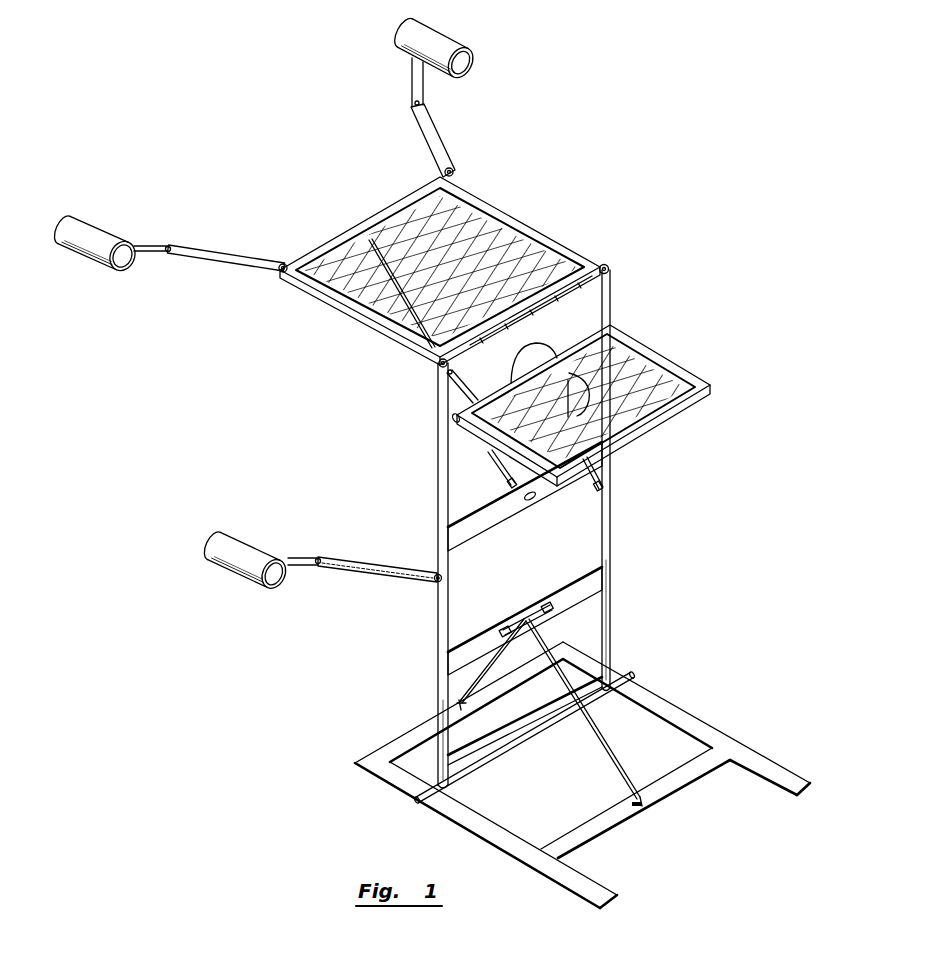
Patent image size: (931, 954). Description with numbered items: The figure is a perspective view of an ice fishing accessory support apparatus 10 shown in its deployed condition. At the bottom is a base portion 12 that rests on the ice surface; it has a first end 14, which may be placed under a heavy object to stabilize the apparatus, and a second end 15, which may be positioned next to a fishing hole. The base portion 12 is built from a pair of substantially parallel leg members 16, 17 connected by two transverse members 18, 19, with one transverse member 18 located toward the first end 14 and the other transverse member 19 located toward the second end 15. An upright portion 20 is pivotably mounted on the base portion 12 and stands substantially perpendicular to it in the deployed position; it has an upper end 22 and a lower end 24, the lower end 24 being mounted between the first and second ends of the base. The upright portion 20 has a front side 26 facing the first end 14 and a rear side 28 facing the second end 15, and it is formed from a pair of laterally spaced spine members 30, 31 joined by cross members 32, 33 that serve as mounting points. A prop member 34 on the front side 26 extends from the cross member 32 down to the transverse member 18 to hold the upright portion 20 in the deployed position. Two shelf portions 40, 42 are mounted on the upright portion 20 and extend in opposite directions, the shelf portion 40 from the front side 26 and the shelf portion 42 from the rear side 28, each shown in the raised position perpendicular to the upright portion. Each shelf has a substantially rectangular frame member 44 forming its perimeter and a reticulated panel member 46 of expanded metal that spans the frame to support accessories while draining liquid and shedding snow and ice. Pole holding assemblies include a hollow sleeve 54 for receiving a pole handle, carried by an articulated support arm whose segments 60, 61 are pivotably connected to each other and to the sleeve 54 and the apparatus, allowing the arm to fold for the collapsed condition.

The ice fishing accessory support apparatus 10 is at (572, 177).
The base portion 12 is at (562, 902).
The first end 14 is at (800, 800).
The second end 15 is at (380, 752).
The leg member 16 is at (692, 722).
The leg member 17 is at (570, 878).
The transverse member 18 is at (668, 787).
The transverse member 19 is at (428, 728).
The upright portion 20 is at (418, 616).
The upper end 22 is at (612, 276).
The lower end 24 is at (490, 750).
The front side 26 is at (620, 571).
The rear side 28 is at (430, 472).
The spine member 30 is at (612, 530).
The spine member 31 is at (440, 690).
The cross member 32 is at (540, 612).
The cross member 33 is at (498, 512).
The prop member 34 is at (605, 758).
The shelf portion 40 is at (648, 336).
The shelf portion 42 is at (354, 330).
The frame member 44 is at (646, 428).
The panel member 46 is at (703, 388).
The sleeve 54 is at (232, 540).
The segment 60 is at (366, 574).
The segment 61 is at (310, 558).